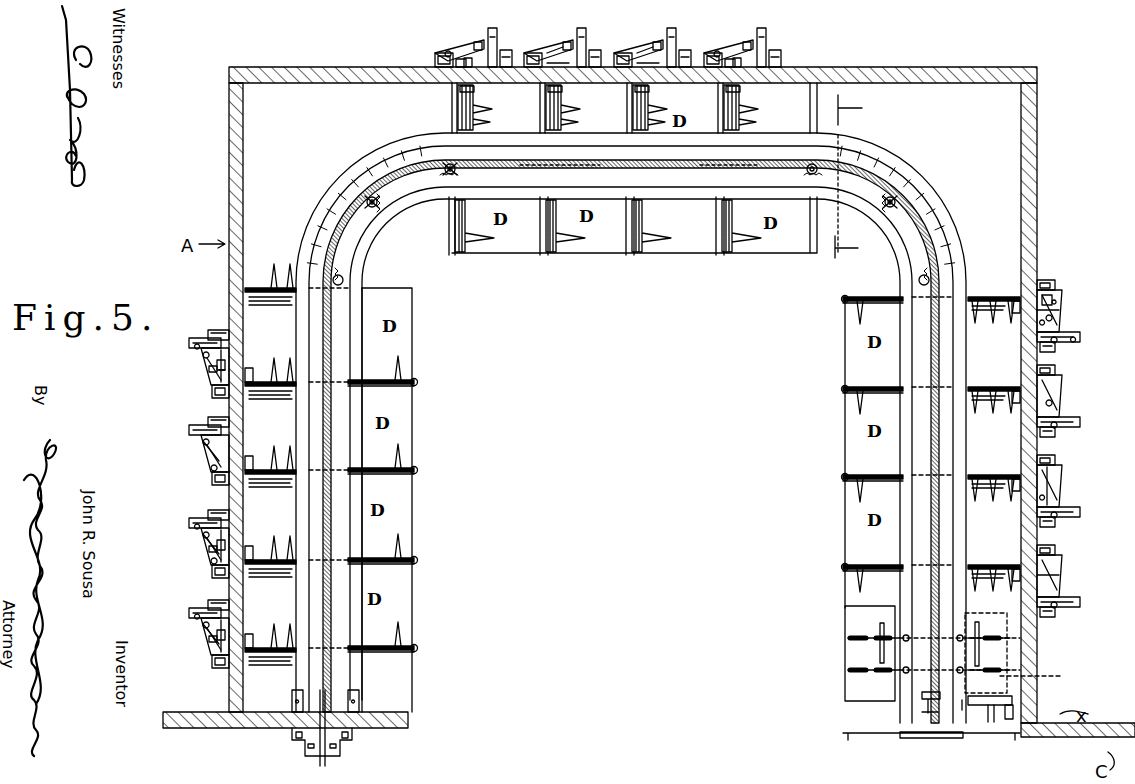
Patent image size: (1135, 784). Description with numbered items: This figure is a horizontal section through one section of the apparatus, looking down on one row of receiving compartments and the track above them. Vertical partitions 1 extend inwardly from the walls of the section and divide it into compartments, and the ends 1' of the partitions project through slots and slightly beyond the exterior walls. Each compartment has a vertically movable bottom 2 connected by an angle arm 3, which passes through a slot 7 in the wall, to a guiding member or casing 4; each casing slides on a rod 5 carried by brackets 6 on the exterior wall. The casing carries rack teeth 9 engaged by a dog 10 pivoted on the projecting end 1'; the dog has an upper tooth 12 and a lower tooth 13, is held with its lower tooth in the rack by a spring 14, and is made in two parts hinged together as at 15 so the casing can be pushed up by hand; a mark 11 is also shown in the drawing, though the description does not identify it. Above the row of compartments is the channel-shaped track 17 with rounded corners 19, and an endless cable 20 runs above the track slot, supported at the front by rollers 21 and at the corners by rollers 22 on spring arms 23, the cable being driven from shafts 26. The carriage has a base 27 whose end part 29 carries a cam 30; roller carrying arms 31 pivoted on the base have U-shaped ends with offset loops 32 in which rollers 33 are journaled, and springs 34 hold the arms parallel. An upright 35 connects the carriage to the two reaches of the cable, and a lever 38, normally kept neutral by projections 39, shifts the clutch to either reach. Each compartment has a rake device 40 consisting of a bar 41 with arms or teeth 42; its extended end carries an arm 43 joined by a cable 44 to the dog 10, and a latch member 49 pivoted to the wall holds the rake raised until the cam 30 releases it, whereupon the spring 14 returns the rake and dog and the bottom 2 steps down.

The vertical partition 1 is at (605, 482).
The projecting end of partition 1' is at (627, 286).
The vertically movable bottom 2 is at (412, 306).
The angle arm 3 is at (508, 62).
The guiding member or casing 4 is at (496, 32).
The rod 5 is at (498, 50).
The bracket 6 is at (656, 48).
The slot 7 is at (362, 345).
The rack teeth 9 is at (554, 50).
The dog 10 is at (446, 52).
The spacing dimension 11 is at (861, 176).
The upper tooth 12 is at (482, 42).
The lower tooth 13 is at (654, 86).
The spring 14 is at (436, 58).
The hinge of dog parts 15 is at (480, 44).
The channel-shaped track 17 is at (362, 688).
The rounded corners of track 19 is at (355, 175).
The endless cable 20 is at (326, 760).
The roller 21 is at (310, 758).
The roller 22 is at (447, 166).
The spring arm 23 is at (345, 262).
The shaft 26 is at (300, 748).
The base of carriage 27 is at (845, 612).
The end part of base 29 is at (1040, 675).
The cam 30 is at (1010, 720).
The roller carrying arm 31 is at (884, 626).
The offset loop 32 is at (918, 636).
The roller 33 is at (906, 638).
The spring 34 is at (848, 662).
The upright 35 is at (922, 700).
The lever 38 is at (1012, 700).
The projection 39 is at (996, 724).
The rake device 40 is at (414, 472).
The bar 41 is at (416, 382).
The arm or tooth 42 is at (404, 362).
The arm 43 is at (468, 50).
The cable 44 is at (738, 52).
The latch member 49 is at (455, 96).